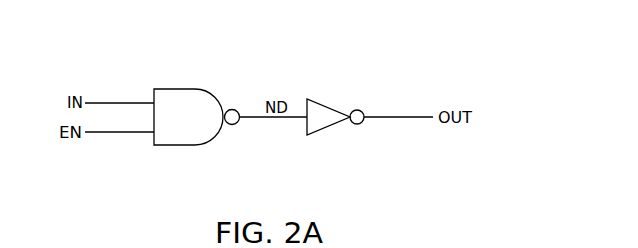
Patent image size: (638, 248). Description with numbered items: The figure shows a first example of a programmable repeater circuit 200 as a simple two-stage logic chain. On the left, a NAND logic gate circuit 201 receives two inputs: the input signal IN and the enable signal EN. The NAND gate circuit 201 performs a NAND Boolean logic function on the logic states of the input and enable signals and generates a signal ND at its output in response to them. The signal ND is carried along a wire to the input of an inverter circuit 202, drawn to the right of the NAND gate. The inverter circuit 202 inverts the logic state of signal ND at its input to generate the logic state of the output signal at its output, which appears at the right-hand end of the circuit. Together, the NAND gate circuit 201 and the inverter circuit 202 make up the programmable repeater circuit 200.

The programmable repeater circuit 200 is at (208, 40).
The NAND logic gate circuit 201 is at (206, 89).
The inverter circuit 202 is at (331, 107).